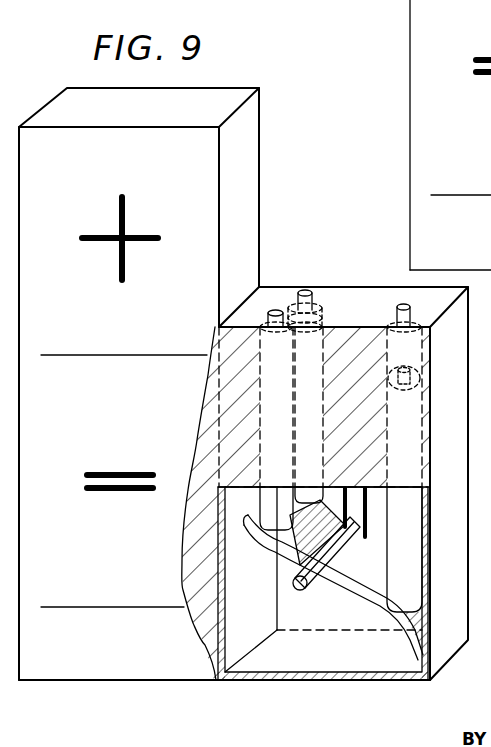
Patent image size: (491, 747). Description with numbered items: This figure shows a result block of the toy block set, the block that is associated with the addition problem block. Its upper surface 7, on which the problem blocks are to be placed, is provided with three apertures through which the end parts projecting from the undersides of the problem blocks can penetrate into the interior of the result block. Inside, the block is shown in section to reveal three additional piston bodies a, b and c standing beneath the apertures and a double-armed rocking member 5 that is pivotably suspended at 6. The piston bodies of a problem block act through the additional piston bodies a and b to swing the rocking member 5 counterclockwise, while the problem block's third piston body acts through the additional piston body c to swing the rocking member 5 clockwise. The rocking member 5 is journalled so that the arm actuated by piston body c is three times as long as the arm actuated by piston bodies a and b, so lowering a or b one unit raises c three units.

The double-armed rocking member 5 is at (288, 562).
The pivot suspension 6 is at (367, 527).
The surface 7 is at (341, 305).
The additional piston body a is at (276, 420).
The additional piston body b is at (305, 396).
The additional piston body c is at (404, 458).